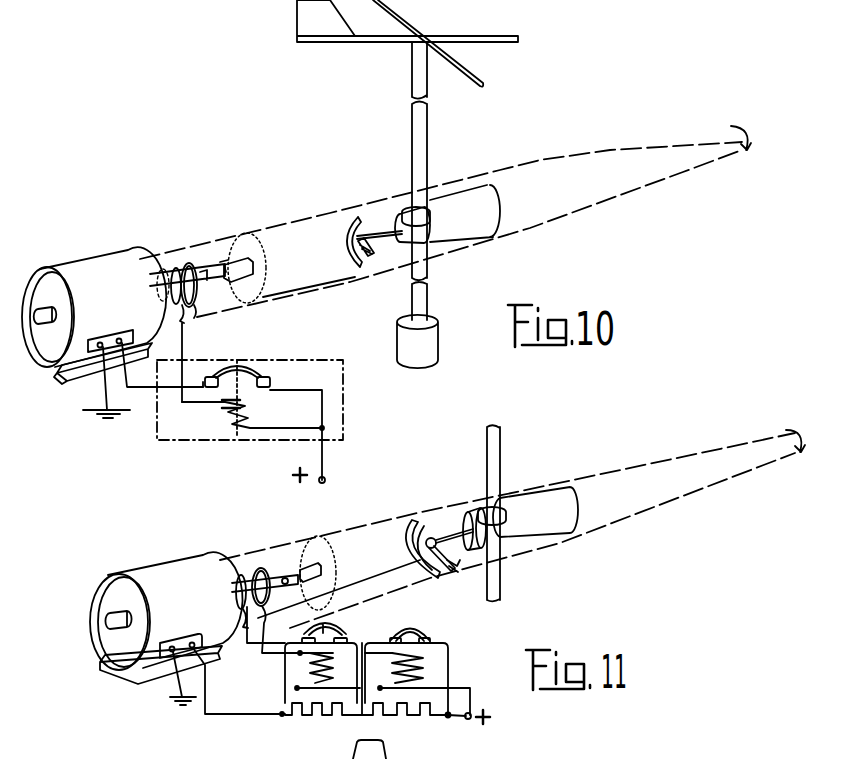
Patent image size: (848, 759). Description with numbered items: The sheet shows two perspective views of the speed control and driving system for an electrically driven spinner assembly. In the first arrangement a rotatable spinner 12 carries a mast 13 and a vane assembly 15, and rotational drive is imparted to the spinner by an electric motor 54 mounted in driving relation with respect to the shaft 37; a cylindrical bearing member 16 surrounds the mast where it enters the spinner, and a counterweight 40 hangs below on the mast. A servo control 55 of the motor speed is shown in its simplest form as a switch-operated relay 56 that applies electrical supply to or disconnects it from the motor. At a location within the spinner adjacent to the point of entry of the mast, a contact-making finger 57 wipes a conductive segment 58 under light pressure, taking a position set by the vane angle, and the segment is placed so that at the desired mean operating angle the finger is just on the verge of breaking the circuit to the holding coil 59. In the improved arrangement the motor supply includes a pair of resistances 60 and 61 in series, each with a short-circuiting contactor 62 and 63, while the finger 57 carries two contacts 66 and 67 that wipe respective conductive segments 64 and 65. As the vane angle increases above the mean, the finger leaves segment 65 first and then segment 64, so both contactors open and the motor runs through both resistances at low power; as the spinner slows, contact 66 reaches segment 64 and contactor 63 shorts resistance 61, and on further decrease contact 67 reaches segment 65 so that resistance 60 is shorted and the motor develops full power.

In FIG. 10, the rotatable spinner 12 is at (566, 213).
In FIG. 11, the rotatable spinner 12 is at (628, 513).
In FIG. 10, the mast 13 is at (412, 145).
In FIG. 11, the mast 13 is at (490, 453).
In FIG. 10, the vane assembly 15 is at (388, 43).
In FIG. 10, the bearing cylinder 16 is at (477, 230).
In FIG. 10, the shaft 37 is at (219, 268).
In FIG. 10, the counterweight 40 is at (441, 327).
In FIG. 10, the electric motor 54 is at (101, 258).
In FIG. 11, the electric motor 54 is at (174, 568).
In FIG. 10, the servo control 55 is at (287, 360).
In FIG. 10, the switch-operated relay 56 is at (228, 365).
In FIG. 10, the contact-making finger 57 is at (356, 256).
In FIG. 11, the contact-making finger 57 is at (443, 510).
In FIG. 10, the conductive segment 58 is at (353, 224).
In FIG. 10, the holding coil 59 is at (221, 406).
In FIG. 11, the resistance 60 is at (306, 720).
In FIG. 11, the resistance 61 is at (394, 721).
In FIG. 11, the short-circuiting contactor 62 is at (335, 627).
In FIG. 11, the short-circuiting contactor 63 is at (423, 630).
In FIG. 11, the conductive segment 64 is at (428, 515).
In FIG. 11, the conductive segment 65 is at (410, 532).
In FIG. 11, the contact 66 is at (460, 551).
In FIG. 11, the contact 67 is at (467, 569).